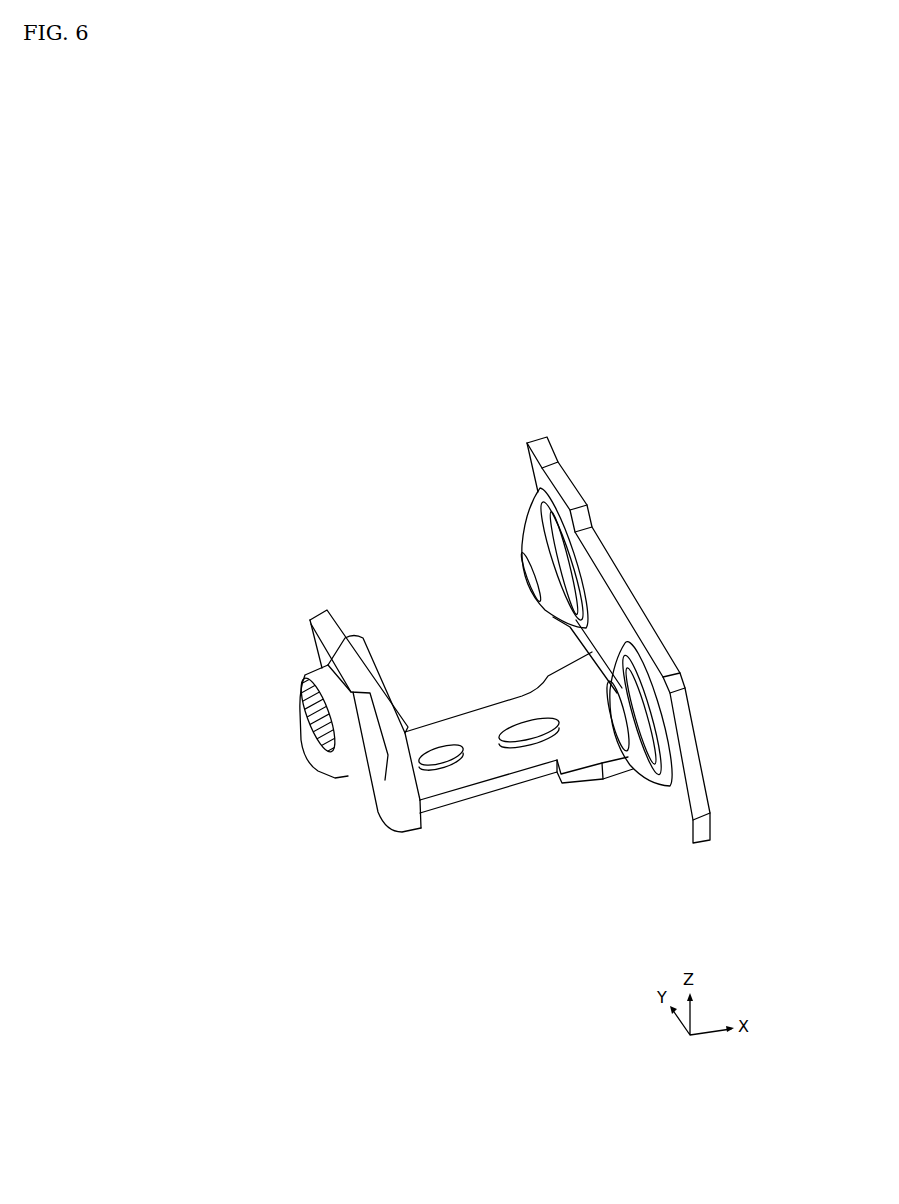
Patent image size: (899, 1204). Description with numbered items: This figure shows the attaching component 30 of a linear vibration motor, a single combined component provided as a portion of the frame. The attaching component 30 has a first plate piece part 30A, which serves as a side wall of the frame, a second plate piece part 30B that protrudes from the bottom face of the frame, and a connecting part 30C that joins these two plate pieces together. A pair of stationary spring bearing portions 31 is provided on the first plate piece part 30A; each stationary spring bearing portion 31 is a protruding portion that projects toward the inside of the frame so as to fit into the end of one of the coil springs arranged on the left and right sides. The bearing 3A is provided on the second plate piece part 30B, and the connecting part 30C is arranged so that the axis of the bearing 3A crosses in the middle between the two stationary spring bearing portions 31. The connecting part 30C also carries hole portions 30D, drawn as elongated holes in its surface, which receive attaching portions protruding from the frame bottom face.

The attaching component 30 is at (668, 455).
The first plate piece part 30A is at (640, 603).
The second plate piece part 30B is at (340, 613).
The connecting part 30C is at (520, 788).
The elongated holes 30D is at (510, 727).
The stationary spring bearing portion 31 is at (522, 542).
The bearing 3A is at (365, 636).